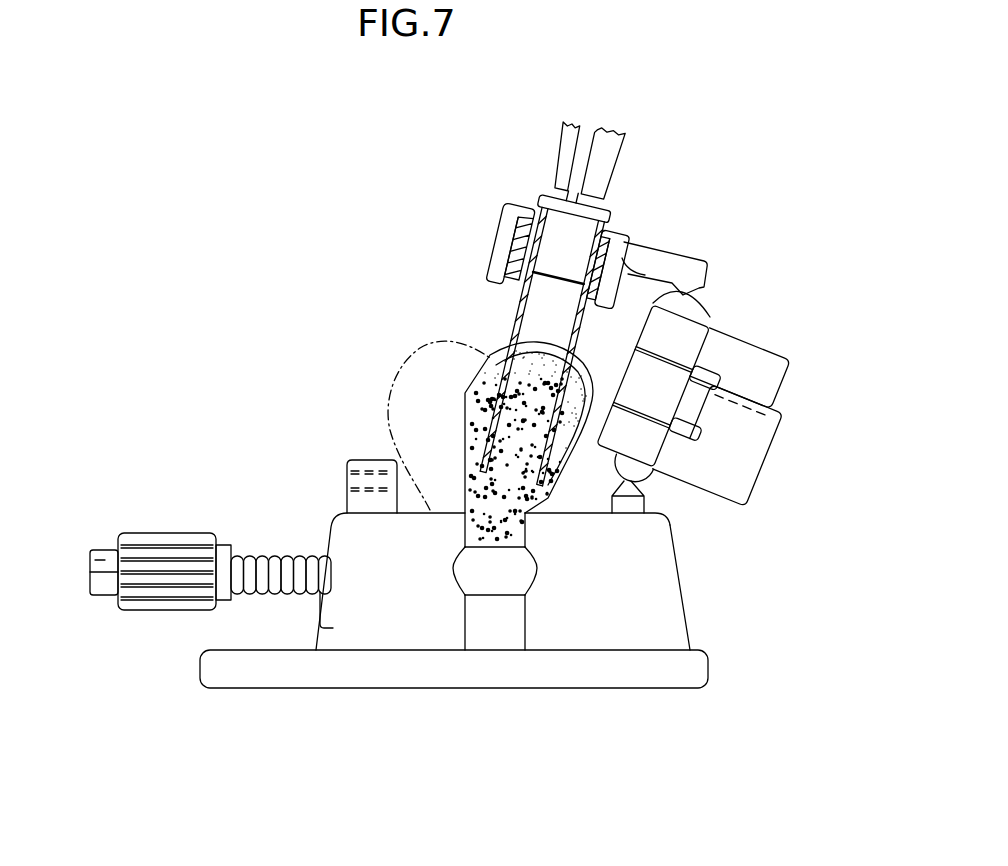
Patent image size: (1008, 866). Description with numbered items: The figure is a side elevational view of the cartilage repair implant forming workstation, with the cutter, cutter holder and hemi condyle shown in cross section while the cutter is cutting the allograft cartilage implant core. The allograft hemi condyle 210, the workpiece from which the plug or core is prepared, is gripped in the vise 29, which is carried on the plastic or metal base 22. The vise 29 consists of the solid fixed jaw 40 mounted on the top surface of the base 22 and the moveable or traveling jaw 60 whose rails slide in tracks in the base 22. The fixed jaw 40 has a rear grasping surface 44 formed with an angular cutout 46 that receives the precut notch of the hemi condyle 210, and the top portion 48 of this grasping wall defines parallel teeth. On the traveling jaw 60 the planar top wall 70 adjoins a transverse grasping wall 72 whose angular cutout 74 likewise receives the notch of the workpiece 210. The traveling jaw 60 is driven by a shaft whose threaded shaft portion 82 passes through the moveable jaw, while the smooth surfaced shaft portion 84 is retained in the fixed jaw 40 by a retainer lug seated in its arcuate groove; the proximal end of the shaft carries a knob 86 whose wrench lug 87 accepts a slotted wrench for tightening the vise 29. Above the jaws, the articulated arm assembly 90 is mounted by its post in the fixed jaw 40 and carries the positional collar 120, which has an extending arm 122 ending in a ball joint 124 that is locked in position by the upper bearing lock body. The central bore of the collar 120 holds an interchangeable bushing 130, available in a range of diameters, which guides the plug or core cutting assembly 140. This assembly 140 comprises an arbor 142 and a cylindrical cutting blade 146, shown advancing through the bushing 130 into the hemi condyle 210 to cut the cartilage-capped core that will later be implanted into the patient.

The base 22 is at (490, 677).
The vise 29 is at (481, 575).
The fixed jaw 40 is at (626, 581).
The rear grasping surface 44 is at (670, 547).
The angular cutout 46 is at (525, 547).
The top portion of the grasping wall 48 is at (465, 528).
The traveling jaw 60 is at (403, 582).
The top wall 70 is at (417, 522).
The grasping wall 72 is at (467, 616).
The angular cutout 74 is at (462, 565).
The threaded shaft portion 82 is at (283, 554).
The smooth surfaced shaft portion 84 is at (421, 647).
The knob 86 is at (158, 611).
The wrench lug 87 is at (90, 578).
The articulated arm assembly 90 is at (737, 415).
The positional collar 120 is at (510, 245).
The extending arm 122 is at (697, 290).
The ball joint 124 is at (653, 386).
The bushing 130 is at (616, 216).
The core cutting assembly 140 is at (565, 301).
The arbor 142 is at (586, 160).
The cylindrical cutting blade 146 is at (542, 346).
The allograft hemi condyle 210 is at (490, 355).